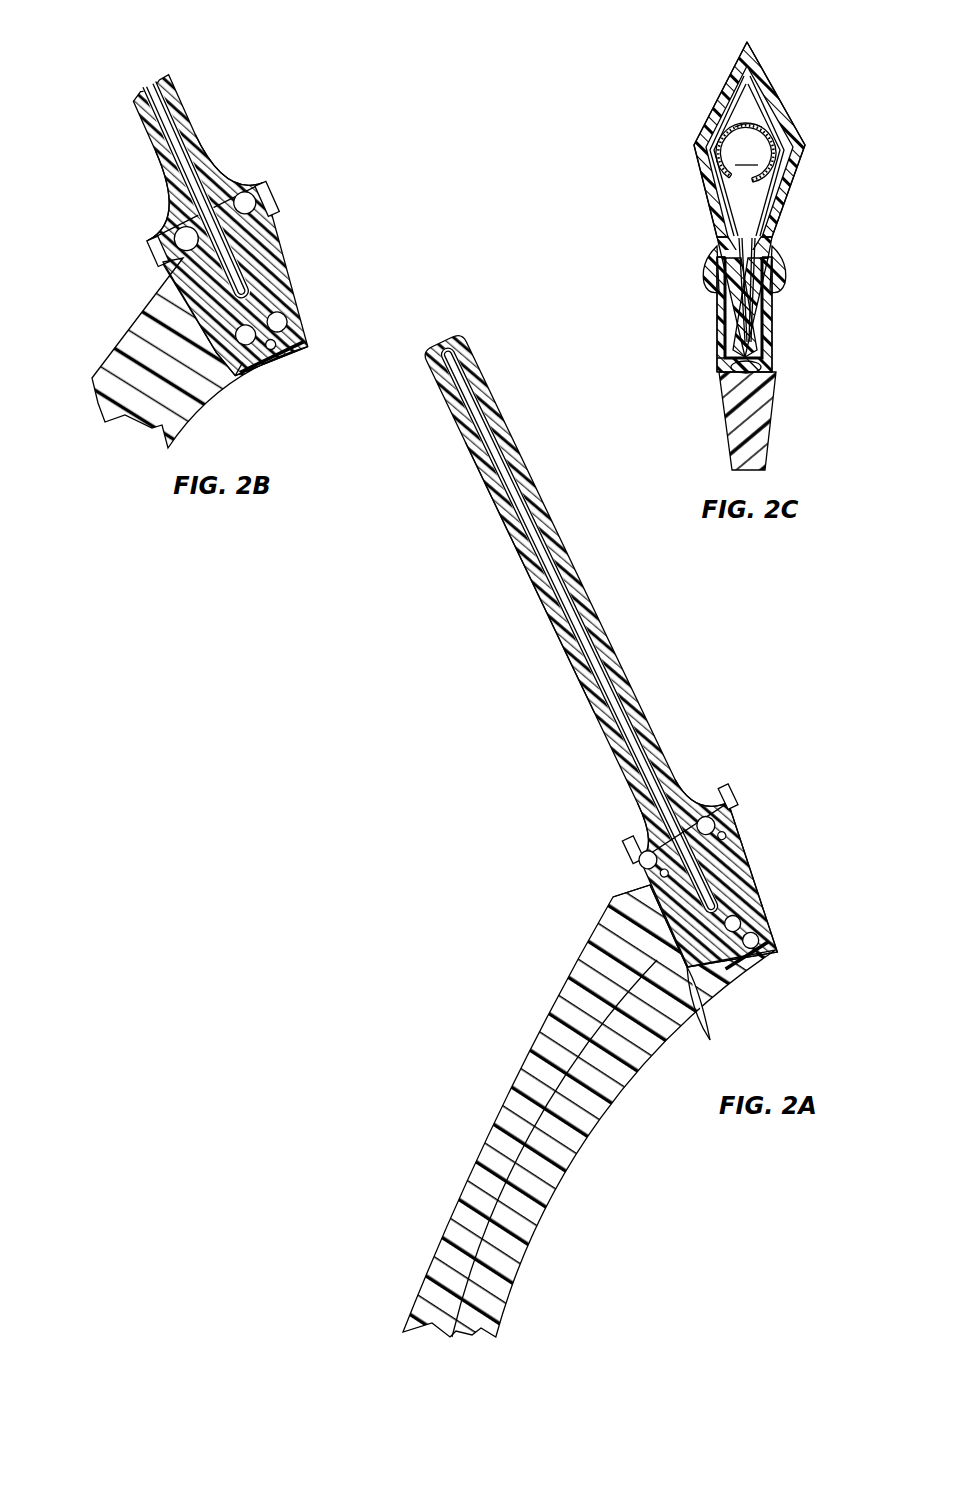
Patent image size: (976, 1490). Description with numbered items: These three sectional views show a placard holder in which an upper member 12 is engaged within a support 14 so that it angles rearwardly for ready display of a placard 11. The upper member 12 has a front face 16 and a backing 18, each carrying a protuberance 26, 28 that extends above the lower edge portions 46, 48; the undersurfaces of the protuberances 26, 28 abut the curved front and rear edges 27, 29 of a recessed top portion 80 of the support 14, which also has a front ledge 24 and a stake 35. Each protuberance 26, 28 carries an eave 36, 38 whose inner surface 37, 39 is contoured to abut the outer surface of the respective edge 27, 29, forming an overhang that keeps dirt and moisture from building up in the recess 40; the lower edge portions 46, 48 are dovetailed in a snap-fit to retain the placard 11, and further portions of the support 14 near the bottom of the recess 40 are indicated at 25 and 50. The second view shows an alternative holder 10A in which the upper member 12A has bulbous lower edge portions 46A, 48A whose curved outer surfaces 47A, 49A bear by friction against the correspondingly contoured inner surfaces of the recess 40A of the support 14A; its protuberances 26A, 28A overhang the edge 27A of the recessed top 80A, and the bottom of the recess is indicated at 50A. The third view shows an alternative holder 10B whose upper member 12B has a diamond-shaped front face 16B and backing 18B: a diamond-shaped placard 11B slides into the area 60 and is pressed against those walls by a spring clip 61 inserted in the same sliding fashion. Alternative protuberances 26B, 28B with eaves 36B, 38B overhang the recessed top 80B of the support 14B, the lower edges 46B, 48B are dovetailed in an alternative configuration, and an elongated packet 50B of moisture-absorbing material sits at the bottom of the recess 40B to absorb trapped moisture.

In FIG. 2B, the alternative holder 10A is at (221, 233).
In FIG. 2B, the upper member 12A is at (231, 248).
In FIG. 2B, the placard 11 is at (197, 190).
In FIG. 2A, the placard 11 is at (579, 630).
In FIG. 2B, the first flared shoulder 26A is at (229, 158).
In FIG. 2B, the first shoulder tab 27A is at (254, 204).
In FIG. 2B, the second flared shoulder 28A is at (152, 196).
In FIG. 2B, the recess 40A is at (175, 244).
In FIG. 2B, the connector block 80A is at (238, 283).
In FIG. 2B, the support 14A is at (120, 323).
In FIG. 2B, the lower edge portion 46A is at (245, 335).
In FIG. 2B, the curved outer surface 47A is at (277, 322).
In FIG. 2B, the base 50A is at (272, 357).
In FIG. 2B, the curved outer surface 49A is at (270, 344).
In FIG. 2B, the lower edge portion 48A is at (239, 368).
In FIG. 2C, the upper member 12B is at (745, 149).
In FIG. 2C, the spring clip 61 is at (753, 120).
In FIG. 2C, the placard 11B is at (700, 115).
In FIG. 2C, the front face 16B is at (800, 125).
In FIG. 2C, the backing 18B is at (695, 170).
In FIG. 2C, the area 60 is at (760, 116).
In FIG. 2C, the alternative holder 10B is at (767, 237).
In FIG. 2C, the protuberance 28B is at (710, 248).
In FIG. 2C, the protuberance 26B is at (785, 248).
In FIG. 2C, the eave 38B is at (703, 258).
In FIG. 2C, the eave 36B is at (790, 280).
In FIG. 2C, the recess 40B is at (725, 310).
In FIG. 2C, the lower edge 46B is at (760, 340).
In FIG. 2C, the lower edge 48B is at (737, 340).
In FIG. 2C, the connector block 80B is at (760, 323).
In FIG. 2C, the elongated packet 50B is at (735, 380).
In FIG. 2C, the holder 14B is at (785, 425).
In FIG. 2A, the upper member 12 is at (636, 661).
In FIG. 2A, the front face 16 is at (598, 652).
In FIG. 2A, the backing 18 is at (529, 577).
In FIG. 2A, the protuberance 28 is at (639, 831).
In FIG. 2A, the protuberance 26 is at (701, 791).
In FIG. 2A, the front edge 27 is at (706, 826).
In FIG. 2A, the eave 36 is at (728, 796).
In FIG. 2A, the inner surface 37 is at (721, 835).
In FIG. 2A, the rear edge 29 is at (648, 860).
In FIG. 2A, the eave 38 is at (633, 850).
In FIG. 2A, the front ledge 24 is at (714, 896).
In FIG. 2A, the inner surface 39 is at (664, 873).
In FIG. 2A, the recessed top portion 80 is at (711, 888).
In FIG. 2A, the support 14 is at (589, 1111).
In FIG. 2A, the lower edge portion 46 is at (732, 923).
In FIG. 2A, the recess 40 is at (592, 955).
In FIG. 2A, the base 50 is at (747, 955).
In FIG. 2A, the lower edge portion 48 is at (750, 940).
In FIG. 2A, the slot 25 is at (706, 1000).
In FIG. 2A, the stake 35 is at (550, 1200).